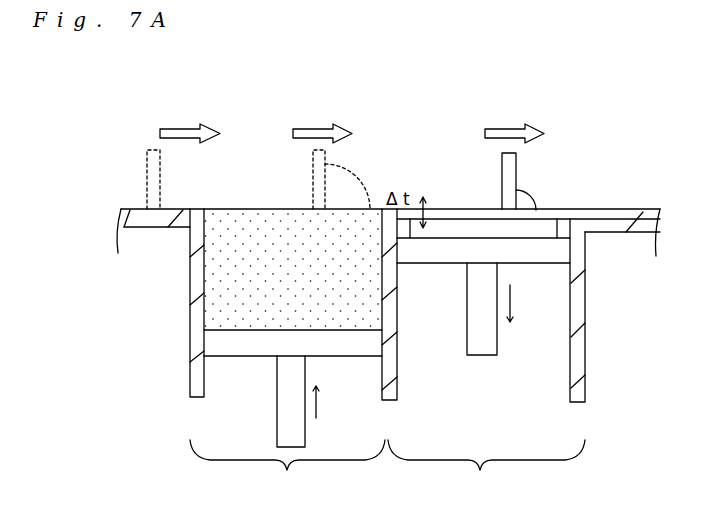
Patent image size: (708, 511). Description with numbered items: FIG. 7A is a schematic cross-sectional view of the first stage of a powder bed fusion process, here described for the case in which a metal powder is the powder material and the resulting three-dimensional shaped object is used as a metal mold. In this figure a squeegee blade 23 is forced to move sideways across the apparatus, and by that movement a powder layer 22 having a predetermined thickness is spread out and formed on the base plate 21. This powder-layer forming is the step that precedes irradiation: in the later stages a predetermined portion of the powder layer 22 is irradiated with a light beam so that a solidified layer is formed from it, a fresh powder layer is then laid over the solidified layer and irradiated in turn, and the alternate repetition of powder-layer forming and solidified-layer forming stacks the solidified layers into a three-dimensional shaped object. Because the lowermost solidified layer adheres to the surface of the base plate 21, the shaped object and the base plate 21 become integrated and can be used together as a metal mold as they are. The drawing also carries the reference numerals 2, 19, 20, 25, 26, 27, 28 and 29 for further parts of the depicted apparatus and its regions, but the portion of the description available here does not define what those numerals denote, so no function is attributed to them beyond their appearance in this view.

The mold device 2 is at (337, 106).
The filler material 19 is at (306, 283).
The base plate 20 is at (540, 250).
The base plate 21 is at (445, 240).
The powder layer 22 is at (455, 212).
The squeegee blade 23 is at (516, 160).
The bottom plate 25 is at (248, 356).
The side wall 26 is at (190, 328).
The side wall 27 is at (585, 351).
The first region 28 is at (287, 471).
The second region 29 is at (486, 471).